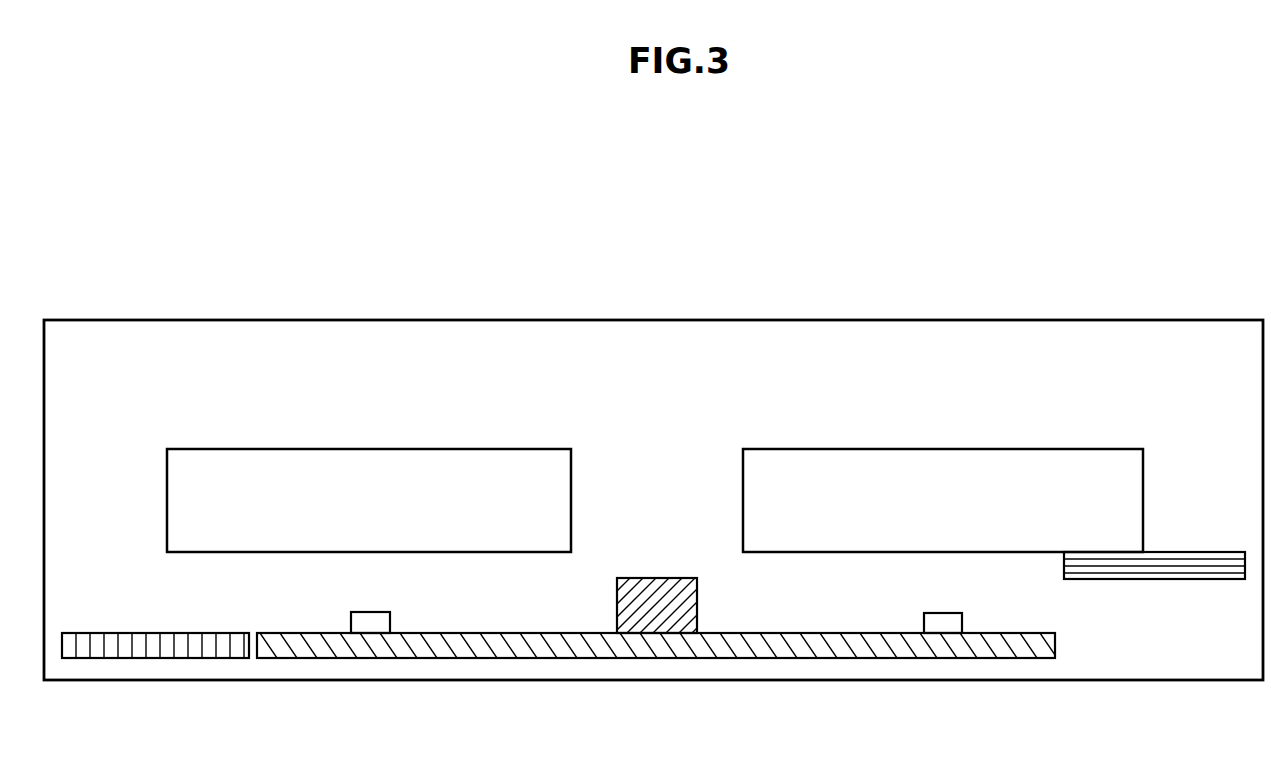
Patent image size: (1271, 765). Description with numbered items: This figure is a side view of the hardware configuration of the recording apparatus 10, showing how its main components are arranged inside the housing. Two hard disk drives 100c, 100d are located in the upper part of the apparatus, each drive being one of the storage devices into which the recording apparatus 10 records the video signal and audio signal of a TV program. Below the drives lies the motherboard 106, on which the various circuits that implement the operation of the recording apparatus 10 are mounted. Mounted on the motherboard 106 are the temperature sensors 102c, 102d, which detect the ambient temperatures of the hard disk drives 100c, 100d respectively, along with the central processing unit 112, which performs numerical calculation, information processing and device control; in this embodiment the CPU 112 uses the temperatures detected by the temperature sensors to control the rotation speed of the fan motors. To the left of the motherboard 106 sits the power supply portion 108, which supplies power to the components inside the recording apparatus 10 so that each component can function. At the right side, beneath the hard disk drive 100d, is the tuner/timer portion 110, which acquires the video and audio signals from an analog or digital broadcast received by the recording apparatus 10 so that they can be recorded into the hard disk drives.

The recording apparatus 10 is at (678, 278).
The hard disk drive 100c is at (365, 449).
The hard disk drive 100d is at (937, 449).
The temperature sensor 102c is at (363, 612).
The temperature sensor 102d is at (938, 613).
The motherboard 106 is at (660, 658).
The power supply portion 108 is at (128, 633).
The tuner/timer portion 110 is at (1215, 552).
The central processing unit (CPU) 112 is at (653, 578).